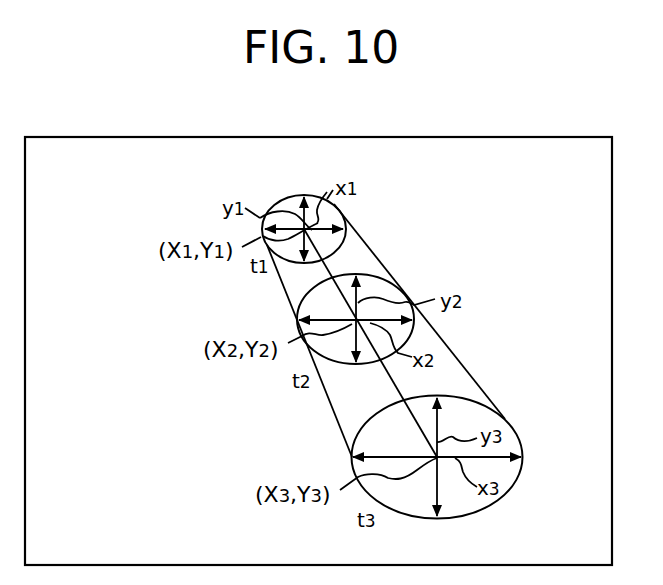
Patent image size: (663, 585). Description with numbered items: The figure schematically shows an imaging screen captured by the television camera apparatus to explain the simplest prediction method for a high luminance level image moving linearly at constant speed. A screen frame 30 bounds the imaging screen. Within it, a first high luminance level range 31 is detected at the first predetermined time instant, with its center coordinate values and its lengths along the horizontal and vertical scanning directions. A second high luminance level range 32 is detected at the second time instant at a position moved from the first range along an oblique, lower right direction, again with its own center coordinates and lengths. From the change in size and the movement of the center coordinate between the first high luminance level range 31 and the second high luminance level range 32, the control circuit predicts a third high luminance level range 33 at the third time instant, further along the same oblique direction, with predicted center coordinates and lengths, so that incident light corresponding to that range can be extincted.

The screen frame 30 is at (488, 136).
The first high luminance level range 31 is at (294, 198).
The second high luminance level range 32 is at (383, 279).
The third high luminance level range 33 is at (480, 403).